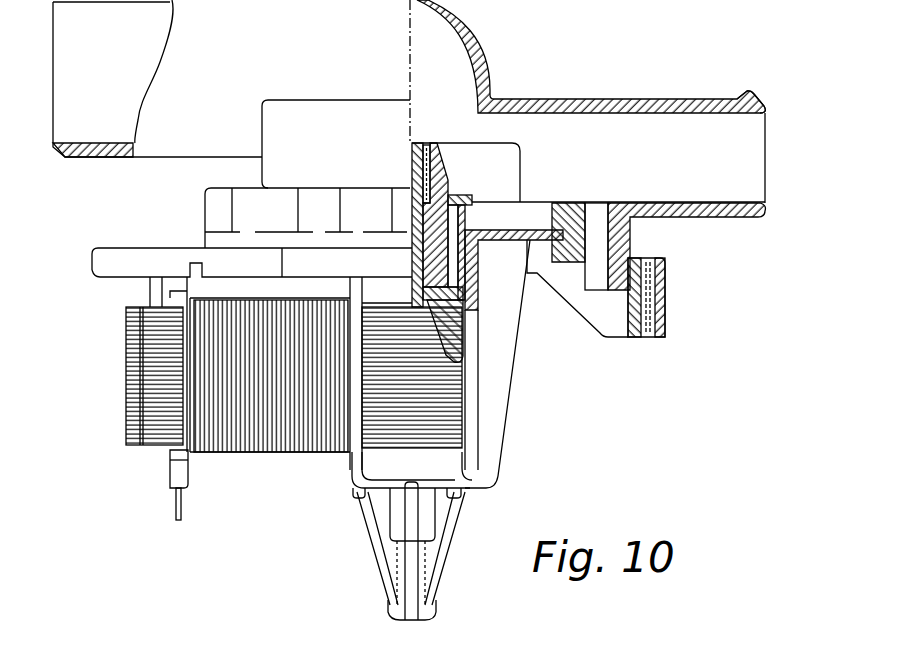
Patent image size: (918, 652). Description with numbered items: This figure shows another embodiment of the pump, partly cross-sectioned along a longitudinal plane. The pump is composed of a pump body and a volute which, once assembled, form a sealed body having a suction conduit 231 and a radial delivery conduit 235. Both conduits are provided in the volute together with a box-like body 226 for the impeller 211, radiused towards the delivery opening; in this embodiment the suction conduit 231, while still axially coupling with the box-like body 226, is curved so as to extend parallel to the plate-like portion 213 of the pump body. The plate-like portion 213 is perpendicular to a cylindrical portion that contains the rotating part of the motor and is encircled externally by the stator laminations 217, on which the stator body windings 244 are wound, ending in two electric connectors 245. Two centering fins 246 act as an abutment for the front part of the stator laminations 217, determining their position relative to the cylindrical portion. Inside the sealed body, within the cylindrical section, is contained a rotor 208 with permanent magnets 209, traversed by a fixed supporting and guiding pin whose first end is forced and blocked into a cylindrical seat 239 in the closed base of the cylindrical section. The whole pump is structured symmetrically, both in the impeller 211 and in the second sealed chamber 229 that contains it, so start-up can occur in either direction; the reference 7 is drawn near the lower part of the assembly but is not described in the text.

The bobbin lip 7 is at (377, 458).
The rotor 208 is at (450, 290).
The permanent magnets 209 is at (465, 312).
The impeller 211 is at (507, 178).
The plate-like portion 213 is at (105, 268).
The stator laminations 217 is at (157, 358).
The box-like body 226 is at (298, 108).
The second sealed chamber 229 is at (455, 122).
The suction conduit 231 is at (157, 146).
The delivery conduit 235 is at (688, 98).
The cylindrical seat 239 is at (397, 528).
The stator body windings 244 is at (270, 437).
The electric connectors 245 is at (172, 507).
The centering fins 246 is at (478, 462).